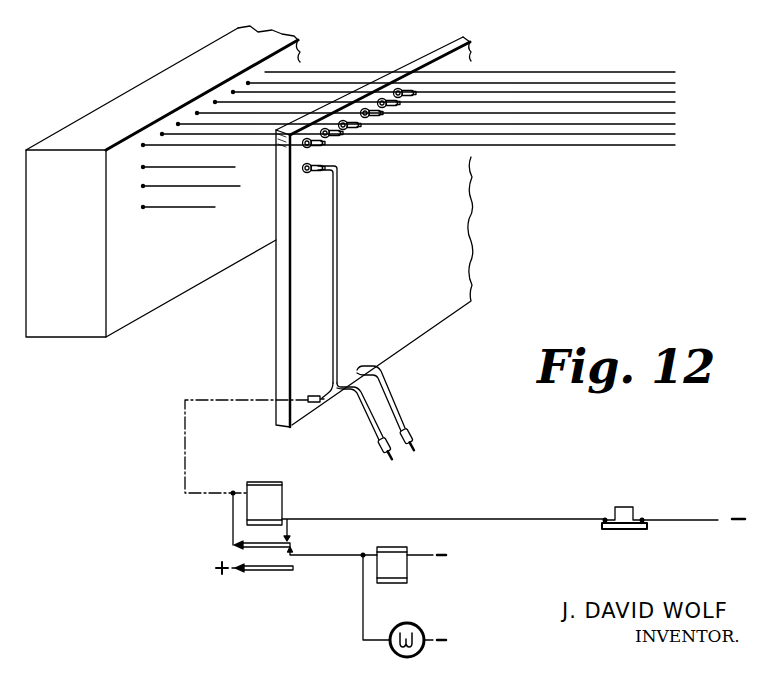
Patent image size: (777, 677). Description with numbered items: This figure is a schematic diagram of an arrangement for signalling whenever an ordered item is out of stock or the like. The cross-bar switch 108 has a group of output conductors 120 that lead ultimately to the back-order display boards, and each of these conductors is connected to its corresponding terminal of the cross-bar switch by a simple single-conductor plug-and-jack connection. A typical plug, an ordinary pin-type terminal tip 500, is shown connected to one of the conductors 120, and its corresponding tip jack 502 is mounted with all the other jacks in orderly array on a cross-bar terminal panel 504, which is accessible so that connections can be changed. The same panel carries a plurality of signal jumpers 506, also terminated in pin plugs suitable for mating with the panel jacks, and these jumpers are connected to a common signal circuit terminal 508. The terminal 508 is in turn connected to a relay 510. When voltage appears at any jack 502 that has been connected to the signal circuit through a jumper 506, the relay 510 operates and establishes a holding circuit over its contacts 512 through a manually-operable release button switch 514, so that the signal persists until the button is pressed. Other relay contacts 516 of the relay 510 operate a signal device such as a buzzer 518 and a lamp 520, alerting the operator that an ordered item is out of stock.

The cross-bar switch 108 is at (143, 88).
The output conductors 120 is at (622, 78).
The pin-type terminal tip plug 500 is at (401, 86).
The tip jack 502 is at (317, 165).
The cross-bar terminal panel 504 is at (467, 235).
The signal jumpers 506 is at (338, 258).
The common signal circuit terminal 508 is at (313, 394).
The relay 510 is at (275, 497).
The relay contacts 512 is at (295, 541).
The manually-operable release button switch 514 is at (635, 517).
The other relay contacts 516 is at (297, 567).
The buzzer 518 is at (403, 570).
The lamp 520 is at (415, 623).